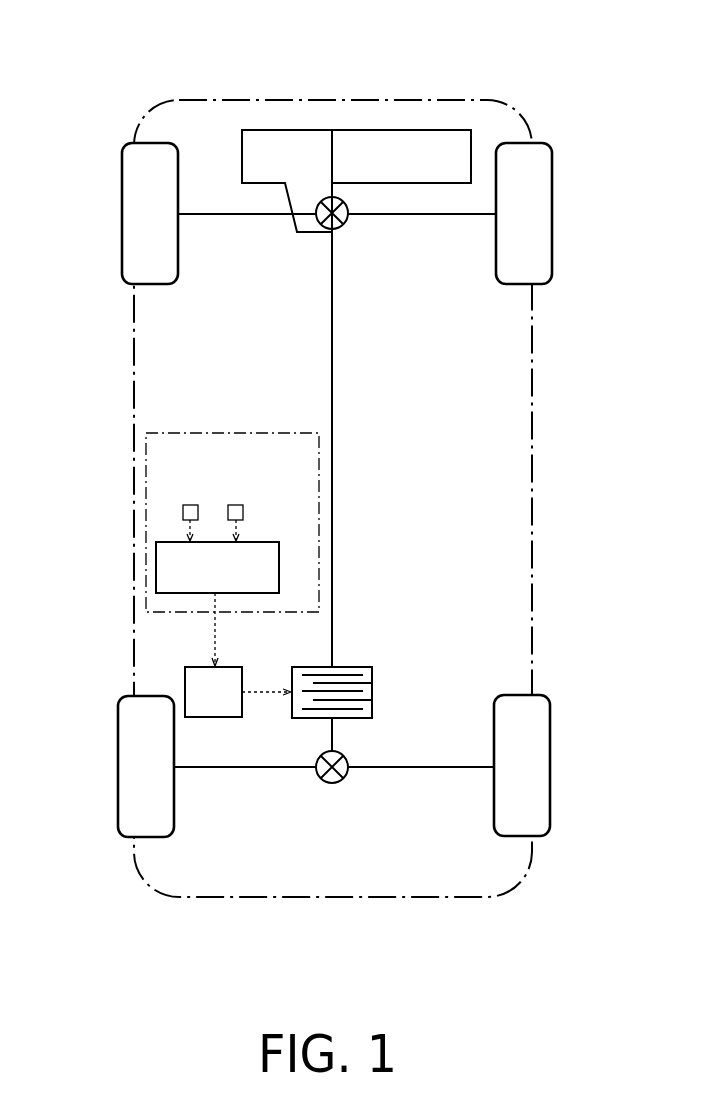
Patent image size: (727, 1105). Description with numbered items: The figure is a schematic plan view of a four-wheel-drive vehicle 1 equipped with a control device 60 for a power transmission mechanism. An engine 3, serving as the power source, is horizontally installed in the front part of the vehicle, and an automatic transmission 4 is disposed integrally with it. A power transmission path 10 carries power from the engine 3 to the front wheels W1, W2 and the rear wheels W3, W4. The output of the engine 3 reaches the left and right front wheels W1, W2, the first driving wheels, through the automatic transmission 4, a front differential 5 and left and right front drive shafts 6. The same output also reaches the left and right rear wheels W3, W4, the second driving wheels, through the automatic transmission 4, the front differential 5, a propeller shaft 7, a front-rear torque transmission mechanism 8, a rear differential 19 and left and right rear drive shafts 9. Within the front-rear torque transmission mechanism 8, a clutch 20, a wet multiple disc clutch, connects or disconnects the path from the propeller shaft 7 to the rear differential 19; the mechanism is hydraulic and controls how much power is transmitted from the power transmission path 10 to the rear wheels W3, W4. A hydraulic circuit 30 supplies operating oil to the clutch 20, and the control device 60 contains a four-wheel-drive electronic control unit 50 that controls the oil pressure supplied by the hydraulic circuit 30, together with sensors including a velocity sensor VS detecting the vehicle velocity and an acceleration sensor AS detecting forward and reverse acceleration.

The vehicle 1 is at (527, 95).
The engine 3 is at (405, 130).
The automatic transmission 4 is at (273, 130).
The front differential 5 is at (343, 228).
The front drive shafts 6 is at (263, 218).
The propeller shaft 7 is at (336, 505).
The front-rear torque transmission mechanism 8 is at (374, 665).
The rear drive shafts 9 is at (253, 770).
The power transmission path 10 is at (322, 342).
The rear differential 19 is at (336, 788).
The clutch 20 is at (372, 695).
The hydraulic circuit 30 is at (185, 687).
The four-wheel-drive electronic control unit (4WD ECU) 50 is at (275, 541).
The control device 60 is at (232, 492).
The front wheel W1 is at (122, 185).
The front wheel W2 is at (552, 185).
The rear wheel W3 is at (118, 757).
The rear wheel W4 is at (550, 760).
The velocity sensor VS is at (188, 505).
The acceleration sensor AS is at (236, 505).